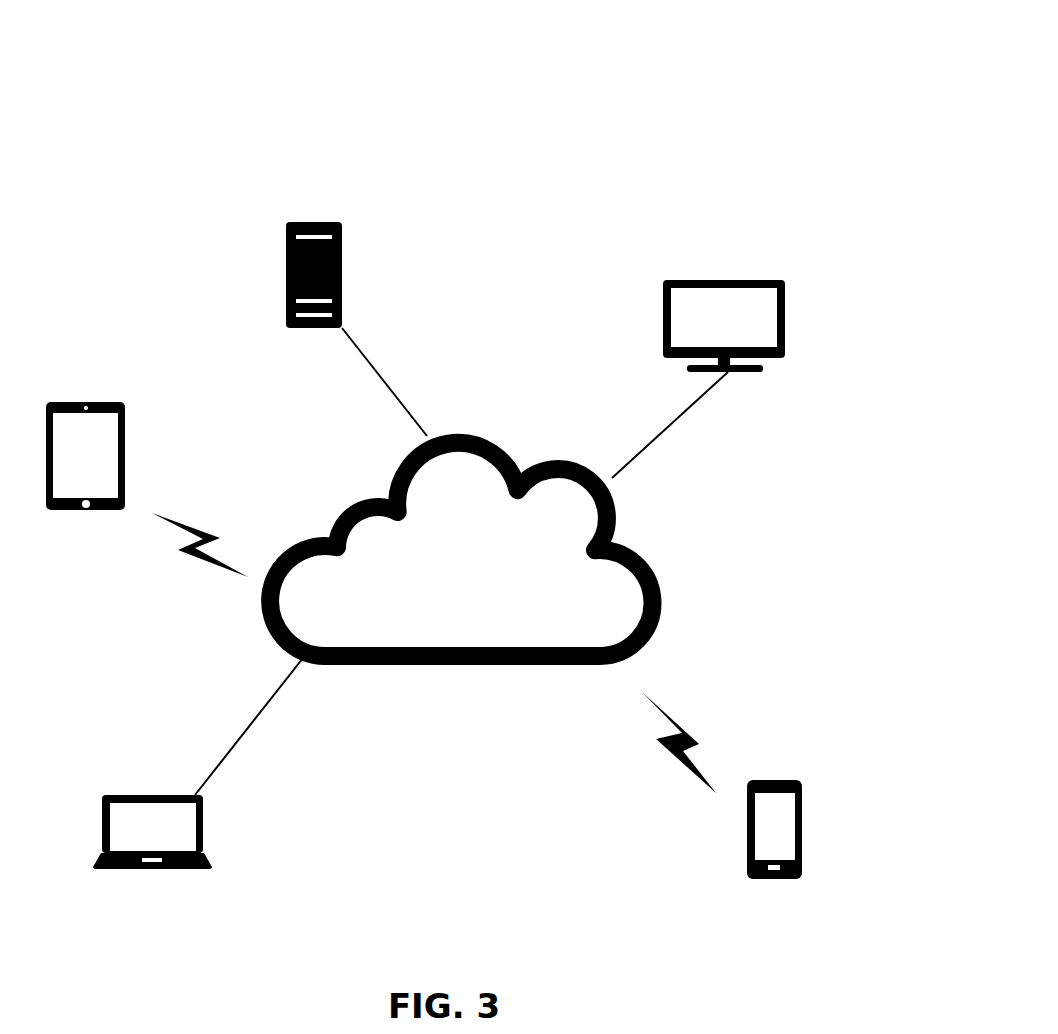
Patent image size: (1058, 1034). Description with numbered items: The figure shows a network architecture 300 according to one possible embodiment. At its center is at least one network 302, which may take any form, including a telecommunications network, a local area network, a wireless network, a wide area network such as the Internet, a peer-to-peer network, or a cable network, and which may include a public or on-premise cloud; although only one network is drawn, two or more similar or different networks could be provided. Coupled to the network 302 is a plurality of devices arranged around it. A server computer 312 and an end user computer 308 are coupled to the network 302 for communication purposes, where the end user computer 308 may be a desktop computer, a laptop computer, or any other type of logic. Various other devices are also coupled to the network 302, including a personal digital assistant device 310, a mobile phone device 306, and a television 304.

The network architecture 300 is at (86, 96).
The network 302 is at (472, 665).
The television 304 is at (728, 280).
The mobile phone device 306 is at (766, 780).
The end user computer 308 is at (148, 795).
The personal digital assistant (PDA) device 310 is at (89, 402).
The server computer 312 is at (312, 222).